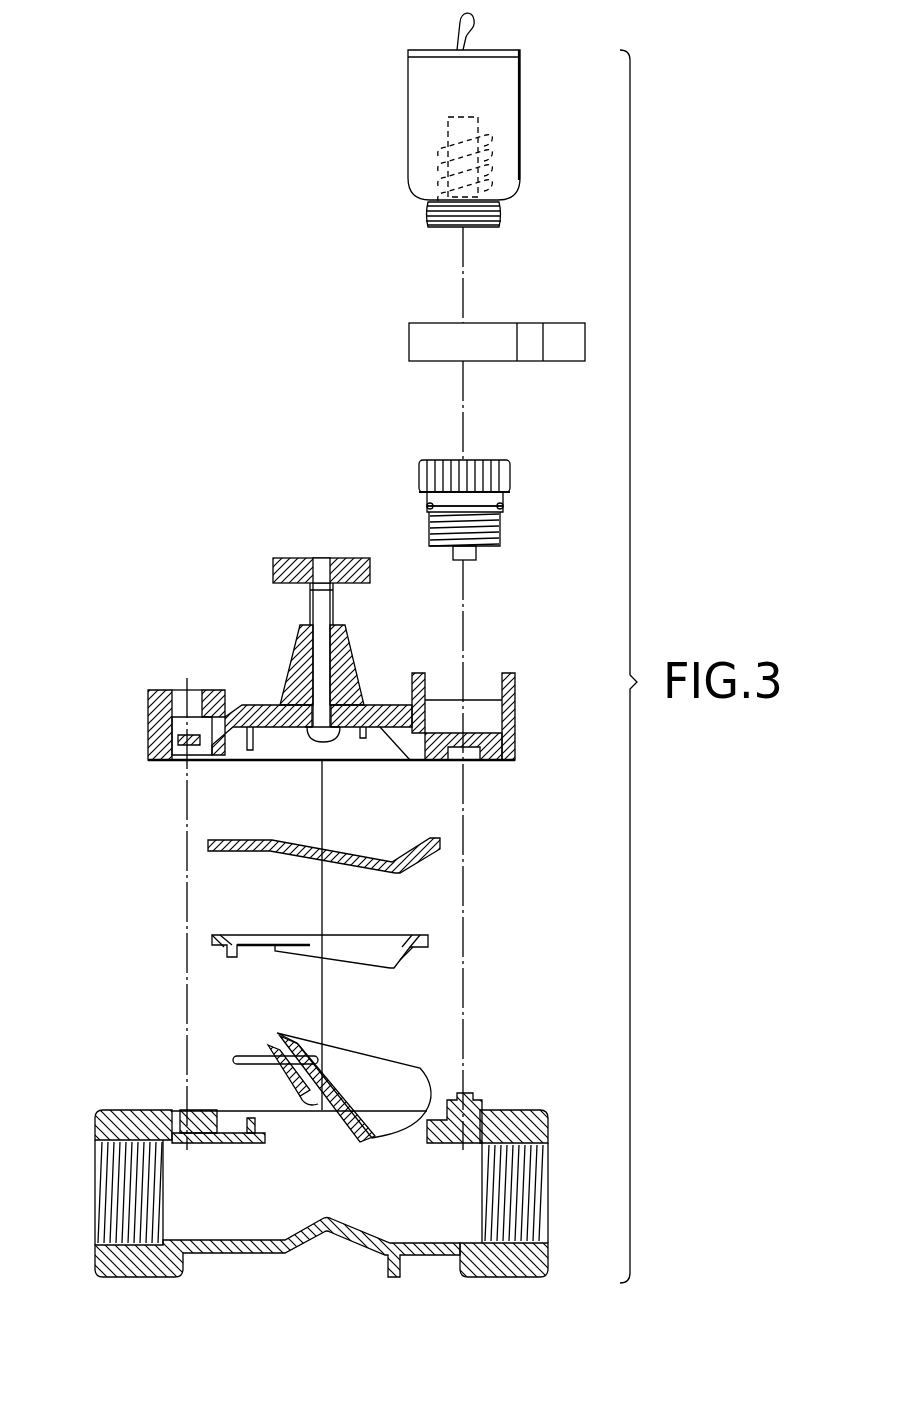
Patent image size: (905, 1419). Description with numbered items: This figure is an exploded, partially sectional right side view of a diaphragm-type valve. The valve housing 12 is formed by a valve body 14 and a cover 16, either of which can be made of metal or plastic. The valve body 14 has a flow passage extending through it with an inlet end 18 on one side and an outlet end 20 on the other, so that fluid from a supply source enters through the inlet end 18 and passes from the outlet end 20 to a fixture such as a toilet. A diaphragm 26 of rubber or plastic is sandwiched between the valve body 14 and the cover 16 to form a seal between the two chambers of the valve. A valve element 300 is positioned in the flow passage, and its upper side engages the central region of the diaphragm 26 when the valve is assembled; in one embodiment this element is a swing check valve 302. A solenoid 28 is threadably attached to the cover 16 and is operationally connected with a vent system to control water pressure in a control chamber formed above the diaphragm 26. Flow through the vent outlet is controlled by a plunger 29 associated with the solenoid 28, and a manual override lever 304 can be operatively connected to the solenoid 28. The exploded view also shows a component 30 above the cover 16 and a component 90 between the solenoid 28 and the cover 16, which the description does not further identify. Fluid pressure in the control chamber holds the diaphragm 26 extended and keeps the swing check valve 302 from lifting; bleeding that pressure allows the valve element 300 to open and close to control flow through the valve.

The valve housing 12 is at (322, 1154).
The valve body 14 is at (548, 1127).
The cover 16 is at (517, 715).
The inlet end 18 is at (96, 1197).
The outlet end 20 is at (548, 1185).
The diaphragm 26 is at (437, 840).
The solenoid 28 is at (412, 80).
The plunger 29 is at (478, 125).
The flow control knob 30 is at (272, 572).
The adapter plug 90 is at (510, 478).
The valve element 300 is at (393, 1064).
The swing check valve 302 is at (212, 937).
The manual override lever 304 is at (425, 330).